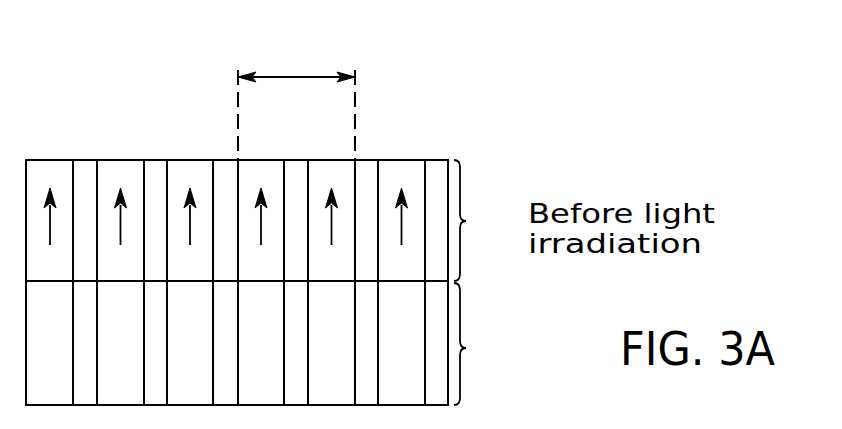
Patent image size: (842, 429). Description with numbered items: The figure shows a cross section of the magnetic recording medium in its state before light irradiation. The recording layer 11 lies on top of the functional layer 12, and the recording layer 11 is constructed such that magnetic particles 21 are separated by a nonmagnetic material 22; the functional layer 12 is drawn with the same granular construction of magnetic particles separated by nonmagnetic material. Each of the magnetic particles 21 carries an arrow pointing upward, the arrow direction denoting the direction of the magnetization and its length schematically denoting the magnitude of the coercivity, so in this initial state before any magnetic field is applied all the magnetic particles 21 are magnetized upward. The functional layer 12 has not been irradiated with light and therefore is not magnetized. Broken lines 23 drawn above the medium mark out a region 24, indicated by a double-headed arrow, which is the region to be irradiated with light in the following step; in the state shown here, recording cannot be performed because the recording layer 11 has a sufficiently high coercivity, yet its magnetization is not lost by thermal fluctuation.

The recording layer 11 is at (477, 220).
The functional layer 12 is at (478, 344).
The magnetic particles 21 is at (48, 167).
The nonmagnetic material 22 is at (88, 167).
The boundary line 23 is at (239, 63).
The region 24 is at (320, 73).